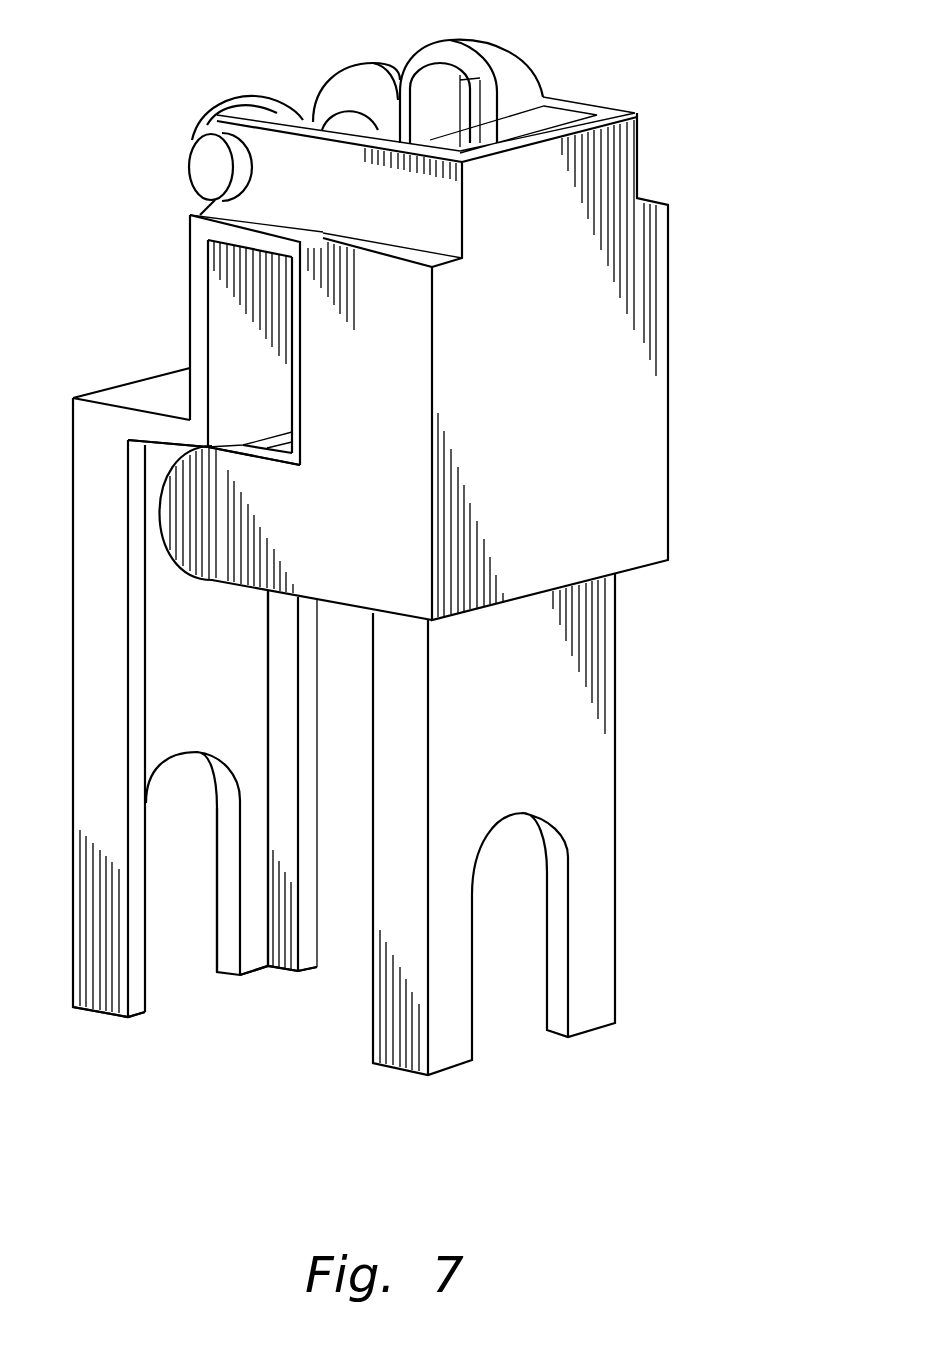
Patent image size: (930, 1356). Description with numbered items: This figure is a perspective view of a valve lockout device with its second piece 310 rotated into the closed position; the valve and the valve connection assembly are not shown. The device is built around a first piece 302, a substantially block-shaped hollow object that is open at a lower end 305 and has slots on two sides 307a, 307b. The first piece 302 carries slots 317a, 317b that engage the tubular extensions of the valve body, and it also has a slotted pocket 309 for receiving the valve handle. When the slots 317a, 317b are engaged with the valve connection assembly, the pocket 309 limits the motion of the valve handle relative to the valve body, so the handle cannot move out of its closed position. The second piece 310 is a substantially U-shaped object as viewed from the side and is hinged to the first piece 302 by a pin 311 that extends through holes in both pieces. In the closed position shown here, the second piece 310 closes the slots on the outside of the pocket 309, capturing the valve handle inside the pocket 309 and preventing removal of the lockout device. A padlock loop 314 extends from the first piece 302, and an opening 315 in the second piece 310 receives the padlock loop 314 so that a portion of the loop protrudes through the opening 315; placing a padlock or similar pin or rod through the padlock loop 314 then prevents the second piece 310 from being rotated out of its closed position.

The first piece 302 is at (617, 668).
The lower end 305 is at (356, 1016).
The side 307a is at (115, 1017).
The side 307b is at (290, 973).
The slotted pocket 309 is at (190, 300).
The second piece 310 is at (668, 360).
The pin 311 is at (203, 160).
The padlock loop 314 is at (507, 55).
The opening 315 is at (365, 65).
The slot 317a is at (225, 900).
The slot 317b is at (555, 967).